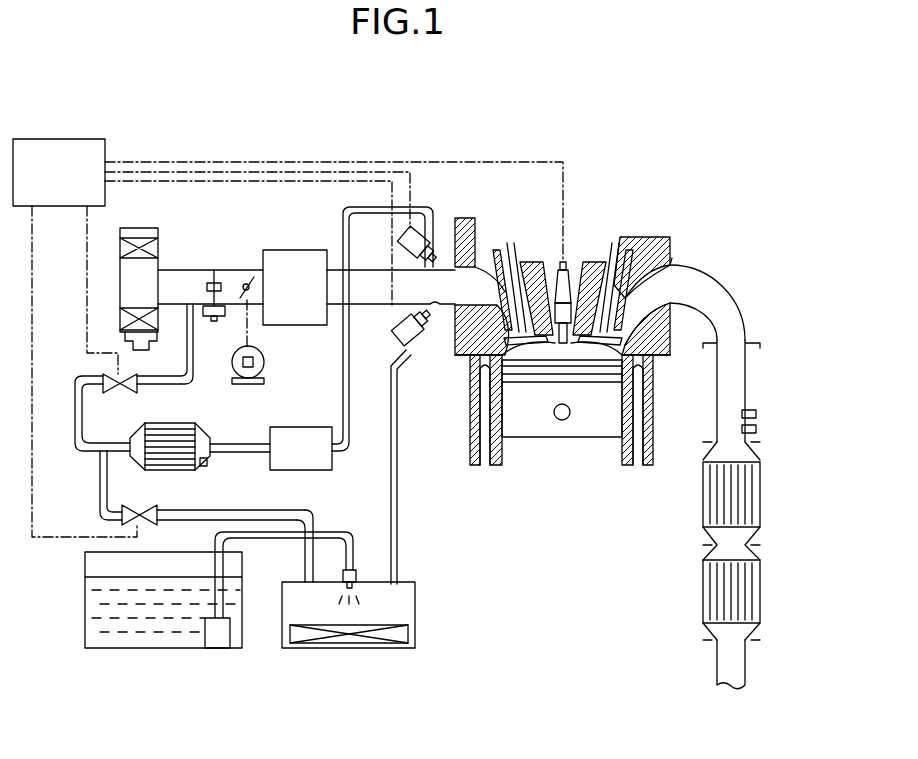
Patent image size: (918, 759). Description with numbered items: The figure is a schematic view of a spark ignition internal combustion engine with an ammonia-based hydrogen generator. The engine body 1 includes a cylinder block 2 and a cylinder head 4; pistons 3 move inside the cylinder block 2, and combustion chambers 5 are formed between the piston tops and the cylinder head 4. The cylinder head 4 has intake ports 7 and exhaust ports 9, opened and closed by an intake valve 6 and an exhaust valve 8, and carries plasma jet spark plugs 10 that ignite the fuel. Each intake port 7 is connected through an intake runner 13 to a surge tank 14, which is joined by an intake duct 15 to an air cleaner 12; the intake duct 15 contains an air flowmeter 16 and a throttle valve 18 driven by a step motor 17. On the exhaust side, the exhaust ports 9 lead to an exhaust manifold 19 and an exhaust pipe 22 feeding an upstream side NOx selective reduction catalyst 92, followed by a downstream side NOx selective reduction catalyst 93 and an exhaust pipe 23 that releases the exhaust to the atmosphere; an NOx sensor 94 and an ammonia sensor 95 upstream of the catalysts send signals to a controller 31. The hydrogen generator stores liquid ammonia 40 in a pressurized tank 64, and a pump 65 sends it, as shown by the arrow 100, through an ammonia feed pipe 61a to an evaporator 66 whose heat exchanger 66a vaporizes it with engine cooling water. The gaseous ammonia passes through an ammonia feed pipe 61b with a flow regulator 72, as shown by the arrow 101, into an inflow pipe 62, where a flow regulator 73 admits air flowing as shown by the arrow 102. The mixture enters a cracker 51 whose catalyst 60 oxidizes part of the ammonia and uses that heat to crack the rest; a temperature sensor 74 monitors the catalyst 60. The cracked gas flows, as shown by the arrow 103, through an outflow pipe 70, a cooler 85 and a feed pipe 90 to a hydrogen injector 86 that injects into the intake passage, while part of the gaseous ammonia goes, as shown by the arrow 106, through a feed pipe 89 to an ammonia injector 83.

The engine body 1 is at (685, 235).
The cylinder block 2 is at (653, 410).
The piston 3 is at (532, 425).
The cylinder head 4 is at (672, 258).
The combustion chamber 5 is at (582, 350).
The intake valve 6 is at (522, 300).
The intake port 7 is at (470, 288).
The exhaust valve 8 is at (600, 300).
The exhaust port 9 is at (645, 288).
The spark plug 10 is at (566, 290).
The air cleaner 12 is at (140, 228).
The intake runner 13 is at (368, 305).
The surge tank 14 is at (300, 250).
The intake duct 15 is at (180, 270).
The air flowmeter 16 is at (214, 270).
The step motor 17 is at (265, 360).
The throttle valve 18 is at (247, 276).
The exhaust manifold 19 is at (745, 305).
The exhaust pipe 22 is at (748, 372).
The exhaust pipe 23 is at (748, 672).
The controller 31 is at (73, 139).
The liquid ammonia 40 is at (122, 645).
The cracker 51 is at (167, 423).
The catalyst 60 is at (160, 466).
The ammonia feed pipe 61a is at (332, 538).
The ammonia feed pipe 61b is at (272, 512).
The inflow pipe 62 is at (153, 386).
The tank 64 is at (85, 597).
The pump 65 is at (205, 636).
The evaporator 66 is at (346, 648).
The heat exchanger 66a is at (408, 632).
The outflow pipe 70 is at (228, 444).
The flow regulator 72 is at (121, 522).
The flow regulator 73 is at (120, 393).
The temperature sensor 74 is at (207, 462).
The ammonia injector 83 is at (398, 346).
The cooler 85 is at (305, 427).
The hydrogen injector 86 is at (400, 246).
The feed pipe 89 is at (397, 438).
The feed pipe 90 is at (349, 426).
The upstream side NOx selective reduction catalyst 92 is at (752, 512).
The downstream side NOx selective reduction catalyst 93 is at (752, 602).
The NOx sensor 94 is at (756, 414).
The ammonia sensor 95 is at (756, 429).
The arrow 100 is at (282, 549).
The arrow 101 is at (180, 509).
The arrow 102 is at (68, 420).
The arrow 103 is at (335, 382).
The arrow 106 is at (383, 455).